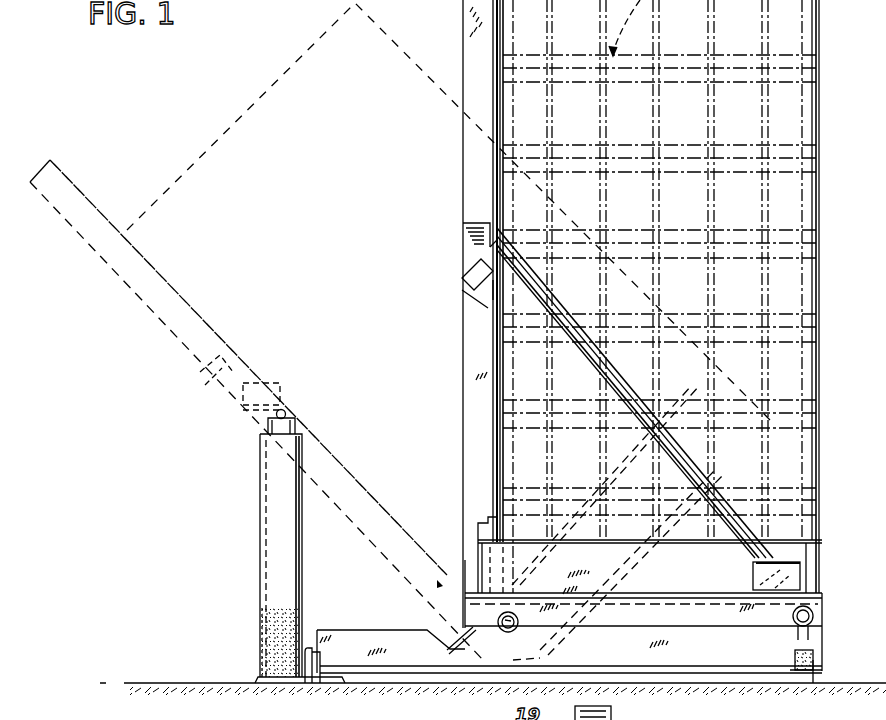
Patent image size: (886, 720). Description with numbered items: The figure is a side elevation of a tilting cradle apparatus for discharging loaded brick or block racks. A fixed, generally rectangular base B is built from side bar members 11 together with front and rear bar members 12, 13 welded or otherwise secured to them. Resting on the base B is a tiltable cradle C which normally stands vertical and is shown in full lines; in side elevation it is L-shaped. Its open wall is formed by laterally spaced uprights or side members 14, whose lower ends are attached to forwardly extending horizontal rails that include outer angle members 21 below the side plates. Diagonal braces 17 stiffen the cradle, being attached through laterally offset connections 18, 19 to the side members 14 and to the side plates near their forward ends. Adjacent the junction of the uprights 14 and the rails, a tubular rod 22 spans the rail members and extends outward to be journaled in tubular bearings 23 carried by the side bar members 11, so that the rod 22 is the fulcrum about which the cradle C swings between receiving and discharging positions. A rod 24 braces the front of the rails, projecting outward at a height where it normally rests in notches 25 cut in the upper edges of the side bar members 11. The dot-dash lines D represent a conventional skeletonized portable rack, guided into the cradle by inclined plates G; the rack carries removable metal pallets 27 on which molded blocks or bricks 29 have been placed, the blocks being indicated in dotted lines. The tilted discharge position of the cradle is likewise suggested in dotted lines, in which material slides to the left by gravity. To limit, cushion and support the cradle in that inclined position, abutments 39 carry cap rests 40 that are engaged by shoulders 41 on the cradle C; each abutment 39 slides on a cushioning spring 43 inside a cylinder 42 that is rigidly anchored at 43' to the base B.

The side bar member 11 is at (724, 652).
The front bar member 12 is at (810, 683).
The rear bar member 13 is at (318, 686).
The upright side member 14 is at (472, 352).
The diagonal brace 17 is at (745, 523).
The laterally offset connection 18 is at (485, 222).
The laterally offset connection 19 is at (753, 574).
The outer angle member 21 is at (688, 626).
The tubular rod 22 is at (516, 613).
The tubular bearing 23 is at (507, 632).
The brace rod 24 is at (793, 613).
The notch 25 is at (801, 628).
The metal pallet 27 is at (666, 296).
The block or brick 29 is at (630, 192).
The abutment 39 is at (268, 427).
The cap rest 40 is at (287, 412).
The shoulder 41 is at (483, 281).
The cylinder 42 is at (282, 556).
The cushioning spring 43 is at (252, 640).
The anchorage 43' is at (298, 698).
The base B is at (747, 667).
The tiltable cradle C is at (461, 80).
The phantom lines representing portable rack D is at (252, 106).
The inclined guide plate G is at (650, 555).